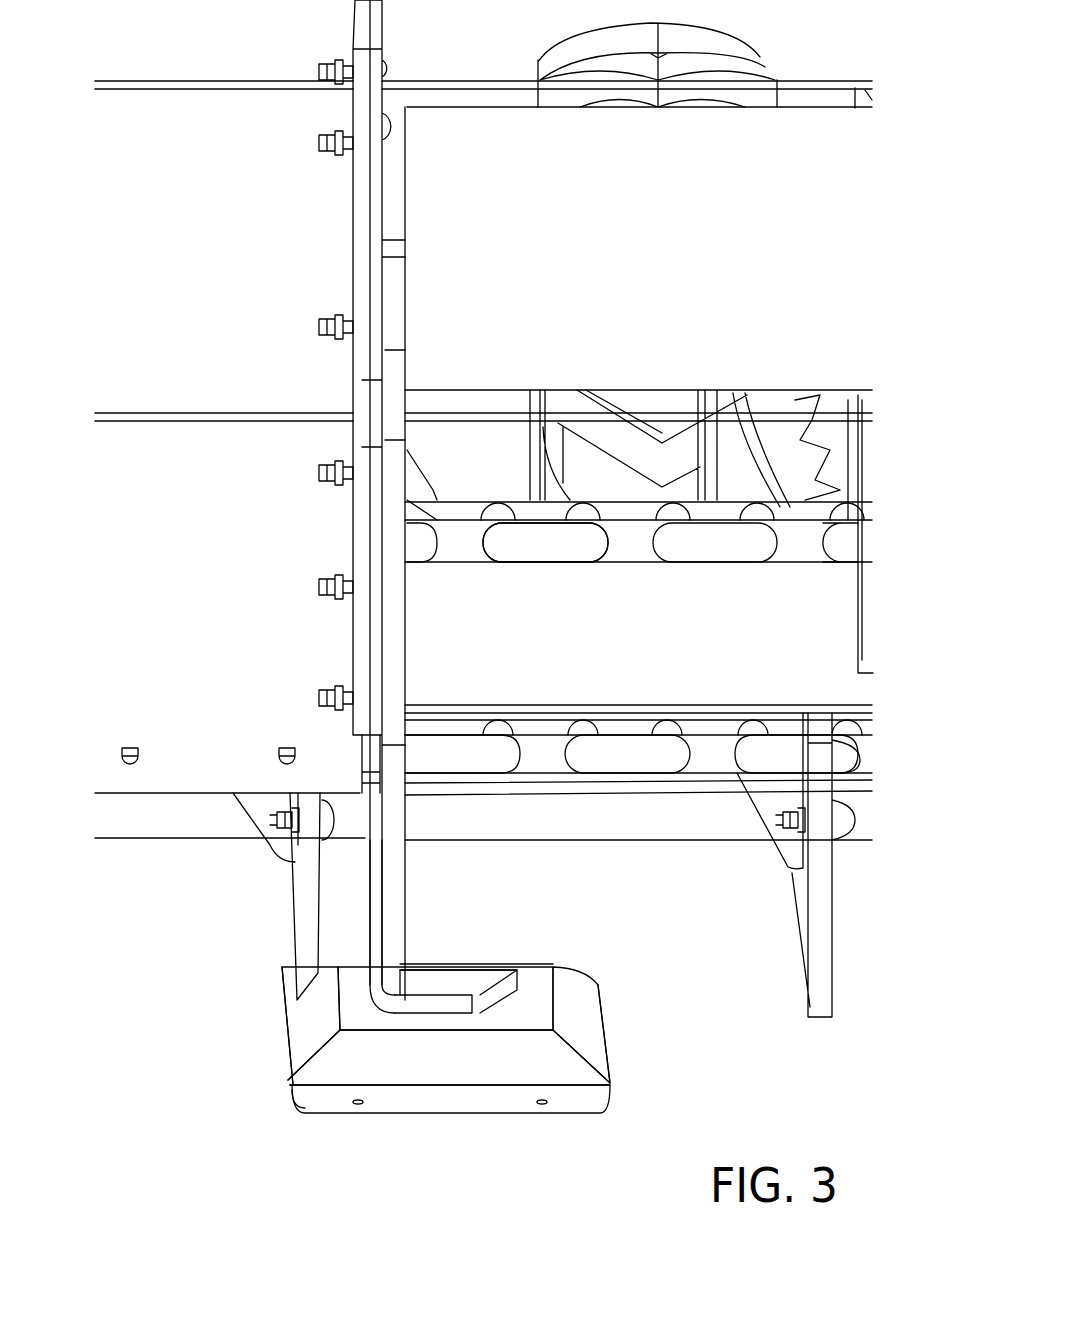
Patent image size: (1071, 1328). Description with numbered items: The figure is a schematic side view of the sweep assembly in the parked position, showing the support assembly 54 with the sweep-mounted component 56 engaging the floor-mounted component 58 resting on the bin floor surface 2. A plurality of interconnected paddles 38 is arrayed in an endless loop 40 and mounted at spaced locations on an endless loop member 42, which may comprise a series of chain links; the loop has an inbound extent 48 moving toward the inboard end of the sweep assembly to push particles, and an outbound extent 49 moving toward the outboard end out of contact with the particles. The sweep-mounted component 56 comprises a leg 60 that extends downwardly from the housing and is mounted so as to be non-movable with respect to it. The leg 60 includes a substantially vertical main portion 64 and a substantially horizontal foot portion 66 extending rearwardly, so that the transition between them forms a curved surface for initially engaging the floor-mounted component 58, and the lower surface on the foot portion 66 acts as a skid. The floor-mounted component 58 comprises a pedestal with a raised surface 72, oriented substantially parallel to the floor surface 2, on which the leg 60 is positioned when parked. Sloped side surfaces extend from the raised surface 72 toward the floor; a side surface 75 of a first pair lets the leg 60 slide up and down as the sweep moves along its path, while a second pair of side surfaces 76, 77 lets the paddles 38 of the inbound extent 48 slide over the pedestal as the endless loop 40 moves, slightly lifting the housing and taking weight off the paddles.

The floor surface 2 is at (287, 1167).
The paddles 38 is at (297, 892).
The endless loop 40 is at (758, 576).
The endless loop member 42 is at (548, 548).
The inbound extent 48 is at (725, 863).
The outbound extent 49 is at (690, 582).
The support assembly 54 is at (226, 1041).
The sweep-mounted component 56 is at (408, 863).
The floor-mounted component 58 is at (397, 1128).
The leg 60 is at (392, 637).
The main portion 64 is at (390, 905).
The foot portion 66 is at (446, 985).
The raised surface 72 is at (530, 985).
The side surface 75 is at (448, 1067).
The side surface 76 is at (302, 1033).
The side surface 77 is at (580, 1027).